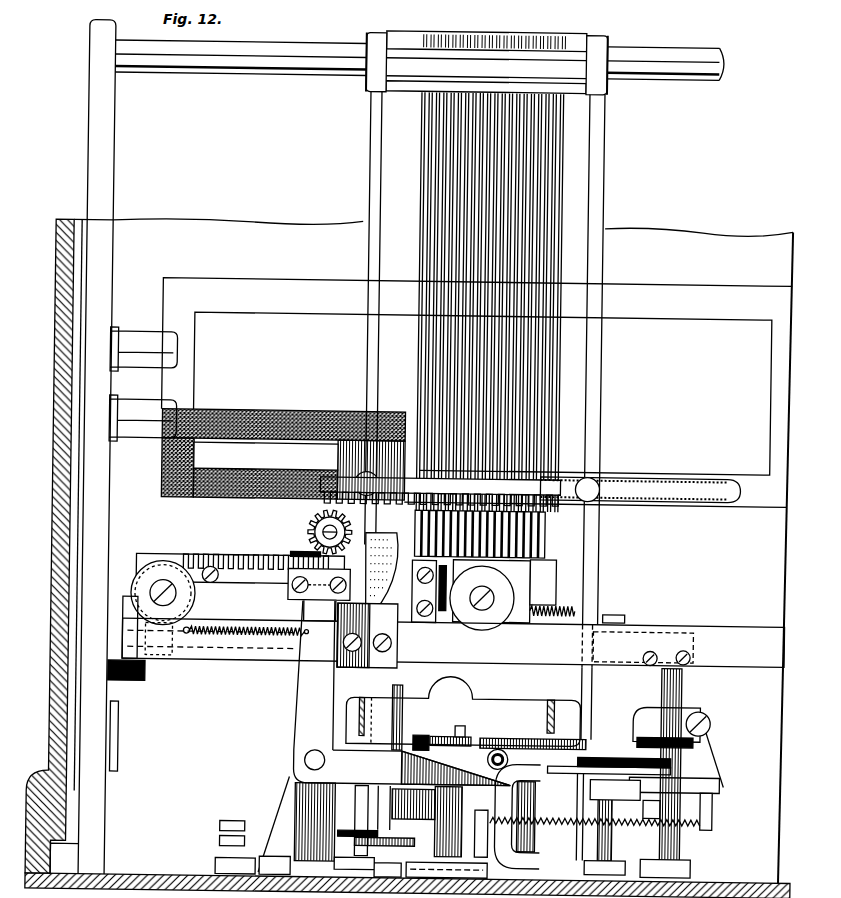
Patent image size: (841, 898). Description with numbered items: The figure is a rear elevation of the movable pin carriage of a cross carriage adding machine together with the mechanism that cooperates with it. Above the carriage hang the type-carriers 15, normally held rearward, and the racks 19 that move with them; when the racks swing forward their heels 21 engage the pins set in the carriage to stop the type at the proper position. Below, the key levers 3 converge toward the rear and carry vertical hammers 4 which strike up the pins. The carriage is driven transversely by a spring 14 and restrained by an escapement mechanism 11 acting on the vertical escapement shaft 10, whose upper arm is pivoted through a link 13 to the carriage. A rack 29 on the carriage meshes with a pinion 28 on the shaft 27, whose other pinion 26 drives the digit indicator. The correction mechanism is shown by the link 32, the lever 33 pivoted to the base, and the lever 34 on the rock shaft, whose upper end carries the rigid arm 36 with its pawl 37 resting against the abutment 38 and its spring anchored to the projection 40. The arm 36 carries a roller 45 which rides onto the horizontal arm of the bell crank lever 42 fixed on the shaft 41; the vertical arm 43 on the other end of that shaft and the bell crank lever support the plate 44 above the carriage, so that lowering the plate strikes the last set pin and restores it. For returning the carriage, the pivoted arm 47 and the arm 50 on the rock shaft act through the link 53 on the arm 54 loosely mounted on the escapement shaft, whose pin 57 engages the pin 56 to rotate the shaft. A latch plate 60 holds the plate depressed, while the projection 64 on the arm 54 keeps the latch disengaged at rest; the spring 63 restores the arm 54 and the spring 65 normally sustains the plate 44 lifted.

The key lever 3 is at (413, 804).
The vertical extension or hammer 4 is at (396, 709).
The vertical shaft 10 is at (670, 773).
The escapement mechanism 11 is at (714, 720).
The link 13 is at (609, 611).
The spring 14 is at (578, 601).
The type-carrier 15 is at (437, 356).
The rack 19 is at (545, 406).
The heel 21 is at (537, 546).
The pinion 26 is at (347, 461).
The shaft 27 is at (318, 534).
The pinion 28 is at (322, 519).
The rack 29 is at (262, 557).
The link 32 is at (226, 844).
The lever 33 is at (260, 825).
The lever 34 is at (375, 837).
The arm 36 is at (520, 732).
The pawl 37 is at (445, 736).
The abutment 38 is at (425, 735).
The projection 40 is at (467, 727).
The rod or shaft 41 is at (319, 757).
The bell crank lever 42 is at (408, 768).
The vertical arm 43 is at (314, 692).
The plate 44 is at (294, 556).
The roller 45 is at (509, 759).
The pivoted arm 47 is at (382, 577).
The arm 50 is at (615, 791).
The link 53 is at (609, 763).
The arm 54 is at (541, 850).
The pin 56 is at (654, 807).
The pin 57 is at (624, 761).
The latch plate 60 is at (222, 871).
The spring 63 is at (585, 823).
The projection 64 is at (396, 876).
The spring 65 is at (245, 639).